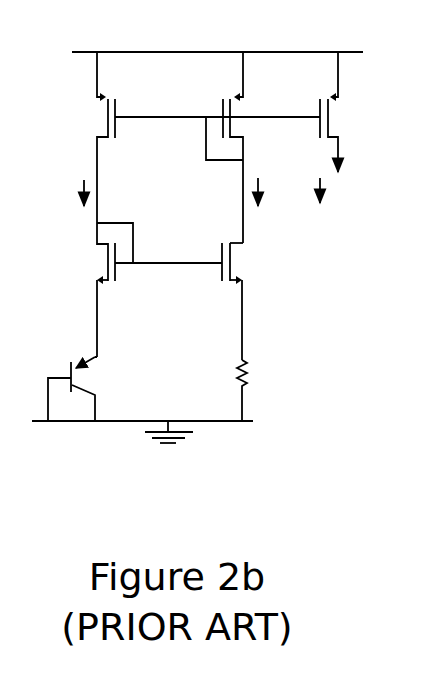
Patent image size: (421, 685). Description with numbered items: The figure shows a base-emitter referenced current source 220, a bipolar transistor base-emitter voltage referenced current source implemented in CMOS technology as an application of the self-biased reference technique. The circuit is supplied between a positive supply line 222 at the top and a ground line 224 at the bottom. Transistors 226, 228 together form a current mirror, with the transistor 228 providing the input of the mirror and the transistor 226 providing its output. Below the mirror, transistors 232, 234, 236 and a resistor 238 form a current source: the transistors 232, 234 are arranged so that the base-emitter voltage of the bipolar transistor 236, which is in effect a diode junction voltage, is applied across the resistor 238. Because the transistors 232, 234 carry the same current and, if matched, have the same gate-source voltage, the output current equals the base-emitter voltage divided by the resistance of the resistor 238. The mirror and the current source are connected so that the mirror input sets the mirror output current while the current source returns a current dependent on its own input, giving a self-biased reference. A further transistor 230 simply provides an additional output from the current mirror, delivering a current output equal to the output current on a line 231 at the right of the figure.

The base-emitter referenced current source 220 is at (118, 487).
The positive supply line 222 is at (107, 52).
The ground line 224 is at (120, 422).
The transistor 226 is at (80, 144).
The transistor 228 is at (193, 147).
The transistor 230 is at (313, 147).
The line 231 is at (344, 157).
The transistor 232 is at (70, 282).
The transistor 234 is at (212, 283).
The transistor 236 is at (98, 370).
The resistor 238 is at (226, 358).